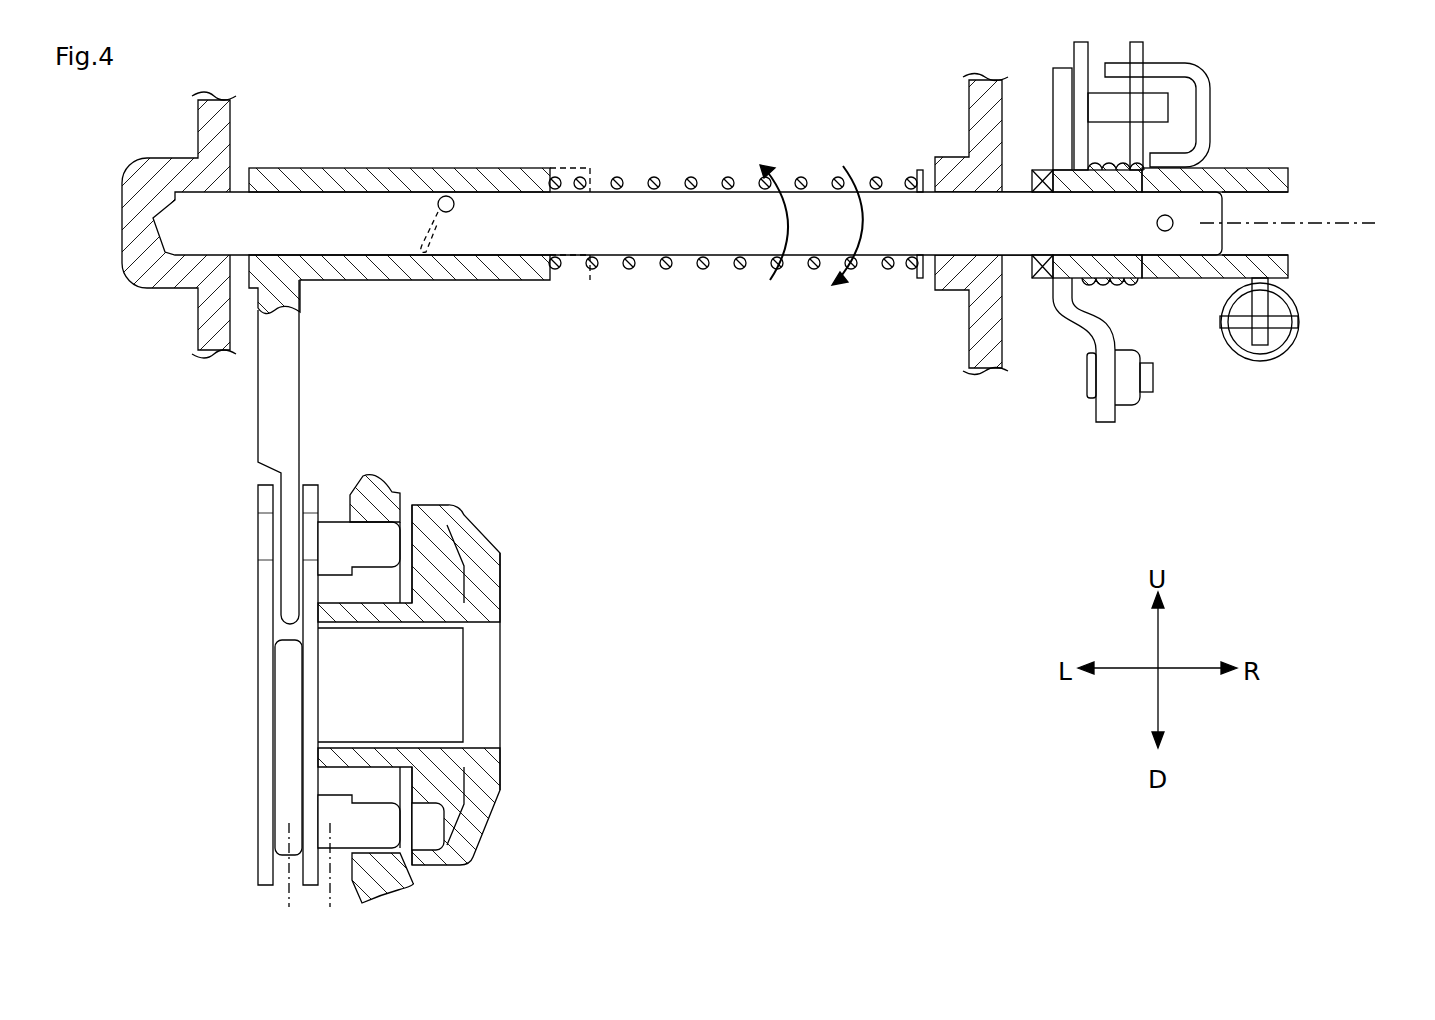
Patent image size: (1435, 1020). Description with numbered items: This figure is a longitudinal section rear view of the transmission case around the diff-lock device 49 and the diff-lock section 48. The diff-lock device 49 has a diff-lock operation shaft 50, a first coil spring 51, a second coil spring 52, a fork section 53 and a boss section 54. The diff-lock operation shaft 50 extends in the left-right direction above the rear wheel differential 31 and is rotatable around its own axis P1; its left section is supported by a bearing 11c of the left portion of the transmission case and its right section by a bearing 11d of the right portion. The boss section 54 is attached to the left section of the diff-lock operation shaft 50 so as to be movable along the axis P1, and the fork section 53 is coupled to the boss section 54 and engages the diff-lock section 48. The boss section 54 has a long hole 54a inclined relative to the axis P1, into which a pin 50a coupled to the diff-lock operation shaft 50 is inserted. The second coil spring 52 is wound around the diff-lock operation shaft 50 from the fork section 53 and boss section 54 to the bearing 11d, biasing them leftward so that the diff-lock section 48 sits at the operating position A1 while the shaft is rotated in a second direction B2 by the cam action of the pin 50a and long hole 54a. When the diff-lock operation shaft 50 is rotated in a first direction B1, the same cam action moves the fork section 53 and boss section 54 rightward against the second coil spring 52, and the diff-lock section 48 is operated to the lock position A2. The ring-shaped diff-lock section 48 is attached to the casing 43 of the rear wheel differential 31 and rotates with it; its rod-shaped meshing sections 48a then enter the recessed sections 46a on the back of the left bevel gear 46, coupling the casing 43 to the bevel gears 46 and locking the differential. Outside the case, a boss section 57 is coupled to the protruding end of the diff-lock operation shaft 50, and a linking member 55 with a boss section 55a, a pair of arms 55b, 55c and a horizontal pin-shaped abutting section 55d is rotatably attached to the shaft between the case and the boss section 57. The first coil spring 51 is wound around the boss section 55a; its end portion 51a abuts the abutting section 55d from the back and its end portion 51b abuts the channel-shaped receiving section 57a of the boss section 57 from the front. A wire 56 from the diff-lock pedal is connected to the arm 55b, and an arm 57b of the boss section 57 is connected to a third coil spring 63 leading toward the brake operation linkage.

The bearing 11c is at (226, 135).
The bearing 11d is at (975, 135).
The diff-lock operation shaft 50 is at (610, 237).
The pin 50a is at (448, 196).
The boss section 54 is at (385, 175).
The long hole 54a is at (428, 250).
The second coil spring 52 is at (693, 178).
The diff-lock device 49 is at (652, 118).
The first direction B1 is at (856, 190).
The second direction B2 is at (783, 270).
The linking member 55 is at (1060, 337).
The boss section 55a is at (1092, 262).
The arm 55b is at (1103, 425).
The arm 55c is at (1058, 83).
The abutting section 55d is at (1160, 107).
The first coil spring 51 is at (1130, 290).
The end portion 51a is at (1080, 44).
The end portion 51b is at (1137, 44).
The boss section 57 is at (1268, 160).
The receiving section 57a is at (1193, 72).
The arm 57b is at (1260, 305).
The third coil spring 63 is at (1290, 340).
The wire 56 is at (1130, 403).
The axis P1 is at (1308, 225).
The fork section 53 is at (272, 397).
The diff-lock section 48 is at (258, 718).
The meshing sections 48a is at (368, 815).
The bevel gears 46 is at (502, 700).
The recessed sections 46a is at (440, 535).
The casing 43 is at (353, 504).
The rear wheel differential 31 is at (522, 526).
The operating position A1 is at (288, 881).
The lock position A2 is at (329, 881).